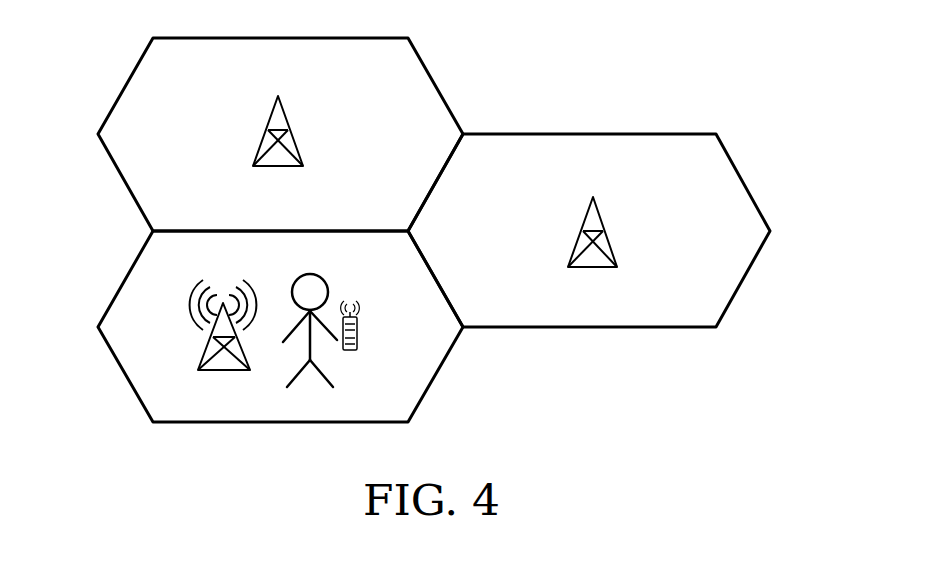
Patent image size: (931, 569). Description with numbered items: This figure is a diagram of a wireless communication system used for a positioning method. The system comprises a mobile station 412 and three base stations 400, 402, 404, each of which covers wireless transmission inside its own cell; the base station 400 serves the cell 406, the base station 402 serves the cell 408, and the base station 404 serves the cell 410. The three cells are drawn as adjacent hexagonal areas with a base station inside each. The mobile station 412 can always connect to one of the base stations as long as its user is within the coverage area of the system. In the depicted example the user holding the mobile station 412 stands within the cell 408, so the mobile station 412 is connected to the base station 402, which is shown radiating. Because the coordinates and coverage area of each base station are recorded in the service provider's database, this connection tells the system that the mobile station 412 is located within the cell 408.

The base station 400 is at (289, 127).
The base station 402 is at (213, 337).
The base station 404 is at (605, 229).
The cell 406 is at (128, 82).
The cell 408 is at (122, 277).
The cell 410 is at (747, 185).
The mobile station 412 is at (358, 333).